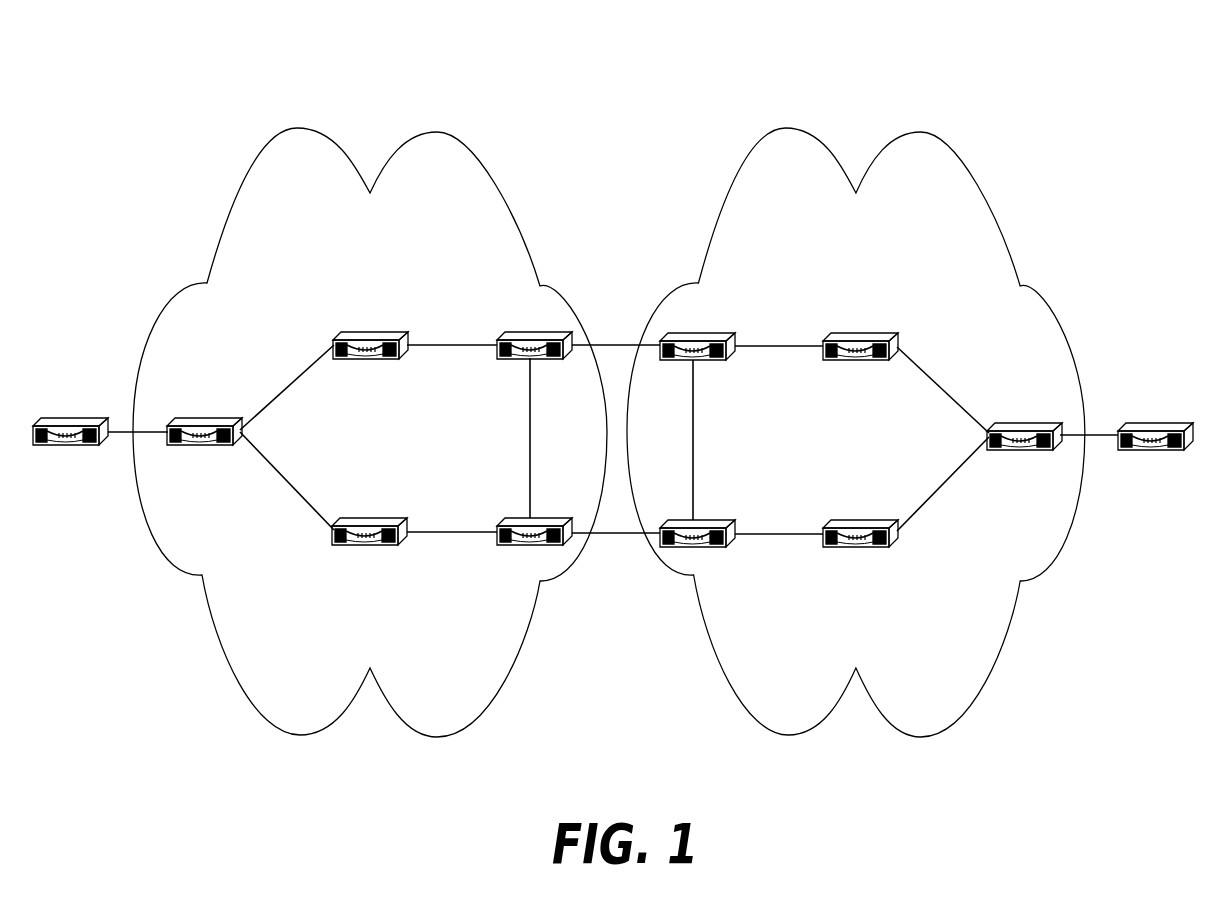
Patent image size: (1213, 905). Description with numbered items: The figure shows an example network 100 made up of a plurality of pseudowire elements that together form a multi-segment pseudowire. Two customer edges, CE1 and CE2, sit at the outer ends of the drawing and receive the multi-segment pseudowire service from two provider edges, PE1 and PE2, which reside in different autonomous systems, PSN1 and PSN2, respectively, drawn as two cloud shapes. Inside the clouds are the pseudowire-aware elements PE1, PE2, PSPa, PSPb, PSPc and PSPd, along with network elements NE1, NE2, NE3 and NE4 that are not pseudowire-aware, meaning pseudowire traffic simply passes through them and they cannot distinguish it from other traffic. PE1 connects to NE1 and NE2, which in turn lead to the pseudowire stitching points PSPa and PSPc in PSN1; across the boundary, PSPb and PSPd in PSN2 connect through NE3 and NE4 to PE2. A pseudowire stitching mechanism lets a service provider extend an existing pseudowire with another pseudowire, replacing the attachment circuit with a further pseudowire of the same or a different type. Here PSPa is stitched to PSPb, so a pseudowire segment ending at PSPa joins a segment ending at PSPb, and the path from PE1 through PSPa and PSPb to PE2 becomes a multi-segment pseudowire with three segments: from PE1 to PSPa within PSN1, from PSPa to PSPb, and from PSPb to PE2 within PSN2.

The network 100 is at (193, 121).
The autonomous system PSN1 is at (327, 668).
The autonomous system PSN2 is at (954, 671).
The customer edge CE1 is at (70, 445).
The customer edge CE2 is at (1155, 451).
The provider edge PE1 is at (204, 446).
The provider edge PE2 is at (1024, 451).
The network element NE1 is at (370, 331).
The network element NE2 is at (369, 545).
The network element NE3 is at (860, 332).
The network element NE4 is at (860, 548).
The pseudowire stitching point PSPa is at (534, 332).
The pseudowire stitching point PSPb is at (697, 332).
The pseudowire stitching point PSPc is at (534, 546).
The pseudowire stitching point PSPd is at (697, 547).